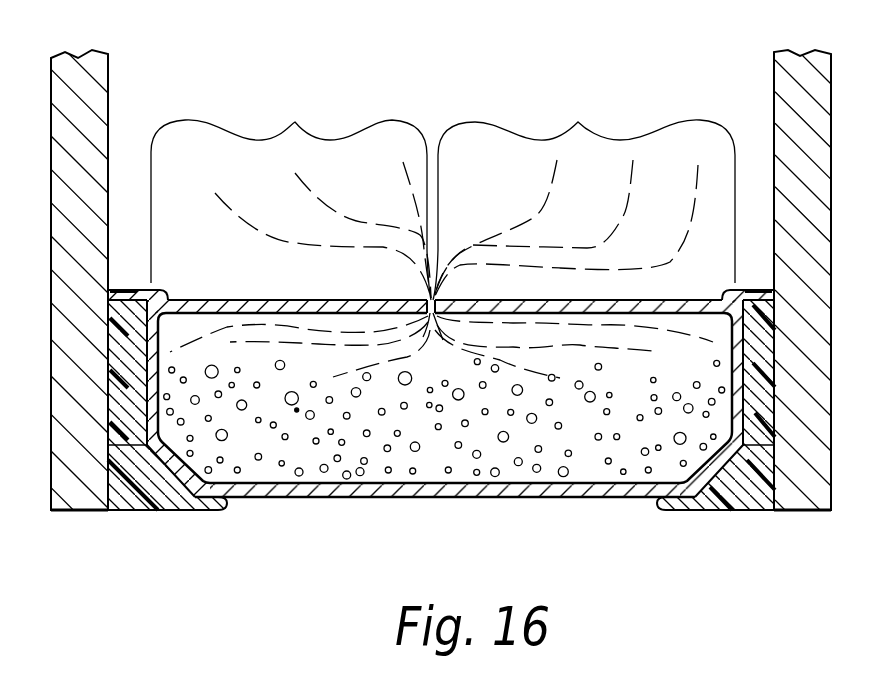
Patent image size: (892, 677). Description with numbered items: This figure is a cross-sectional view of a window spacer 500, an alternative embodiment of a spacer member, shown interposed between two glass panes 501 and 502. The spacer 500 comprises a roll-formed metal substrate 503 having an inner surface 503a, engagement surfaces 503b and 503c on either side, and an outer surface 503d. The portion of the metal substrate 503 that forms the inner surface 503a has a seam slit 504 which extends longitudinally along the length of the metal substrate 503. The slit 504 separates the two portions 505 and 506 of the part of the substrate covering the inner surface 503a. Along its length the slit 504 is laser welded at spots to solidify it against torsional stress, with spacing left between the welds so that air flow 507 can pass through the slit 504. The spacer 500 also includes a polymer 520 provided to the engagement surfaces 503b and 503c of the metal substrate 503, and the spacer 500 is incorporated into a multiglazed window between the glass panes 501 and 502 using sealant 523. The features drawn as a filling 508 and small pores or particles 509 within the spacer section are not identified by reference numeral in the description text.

The window spacer 500 is at (431, 127).
The glass pane 501 is at (110, 88).
The glass pane 502 is at (773, 110).
The roll-formed metal substrate 503 is at (653, 298).
The inner surface 503a is at (230, 298).
The engagement surface 503b is at (113, 447).
The engagement surface 503c is at (760, 360).
The outer surface 503d is at (553, 497).
The seam slit 504 is at (430, 298).
The portion 505 is at (291, 195).
The portion 506 is at (584, 195).
The air flow 507 is at (630, 184).
The fill material 508 is at (333, 456).
The pores 509 is at (648, 473).
The polymer 520 is at (108, 420).
The sealant 523 is at (162, 493).